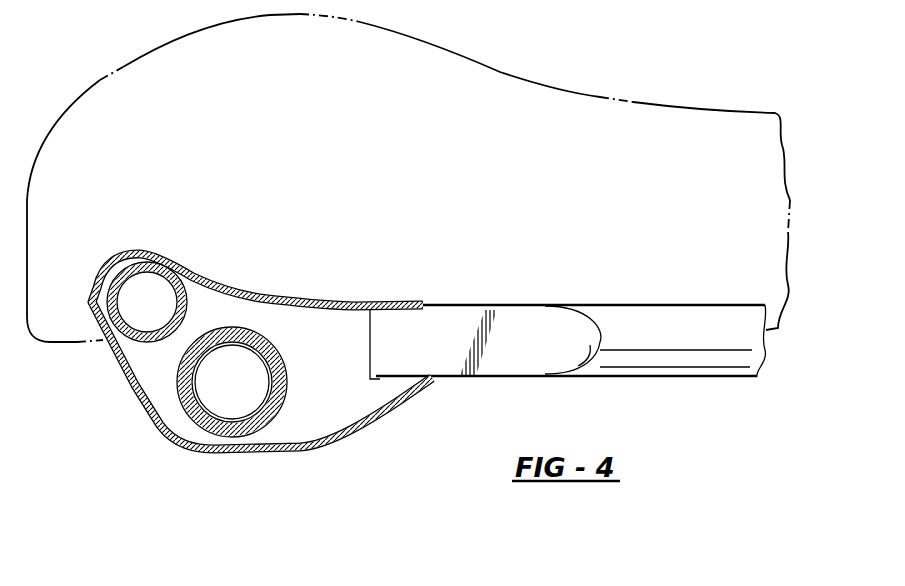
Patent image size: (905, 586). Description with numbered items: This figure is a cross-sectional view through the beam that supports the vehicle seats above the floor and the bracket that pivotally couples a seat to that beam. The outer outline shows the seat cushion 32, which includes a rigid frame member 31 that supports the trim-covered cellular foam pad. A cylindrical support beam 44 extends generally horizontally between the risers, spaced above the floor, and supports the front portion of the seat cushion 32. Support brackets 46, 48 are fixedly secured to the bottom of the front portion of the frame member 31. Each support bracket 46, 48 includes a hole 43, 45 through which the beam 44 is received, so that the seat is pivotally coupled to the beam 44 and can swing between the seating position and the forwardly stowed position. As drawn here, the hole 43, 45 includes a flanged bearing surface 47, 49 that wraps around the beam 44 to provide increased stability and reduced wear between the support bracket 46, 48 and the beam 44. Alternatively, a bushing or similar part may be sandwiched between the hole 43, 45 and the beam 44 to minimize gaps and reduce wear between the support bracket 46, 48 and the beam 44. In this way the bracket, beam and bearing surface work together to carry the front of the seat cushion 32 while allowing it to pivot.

The frame member 31 is at (112, 350).
The seat cushion 32 is at (678, 104).
The hole 43 is at (260, 365).
The support beam 44 is at (220, 433).
The hole 45 is at (260, 365).
The support bracket 46 is at (260, 365).
The flanged bearing surface 47 is at (260, 365).
The support bracket 48 is at (260, 365).
The flanged bearing surface 49 is at (360, 298).